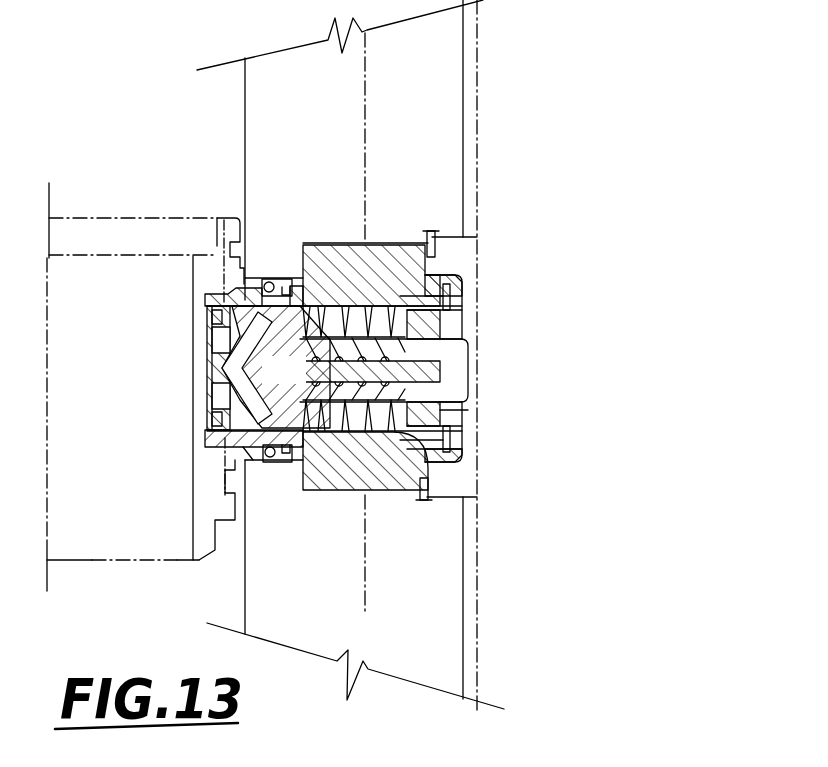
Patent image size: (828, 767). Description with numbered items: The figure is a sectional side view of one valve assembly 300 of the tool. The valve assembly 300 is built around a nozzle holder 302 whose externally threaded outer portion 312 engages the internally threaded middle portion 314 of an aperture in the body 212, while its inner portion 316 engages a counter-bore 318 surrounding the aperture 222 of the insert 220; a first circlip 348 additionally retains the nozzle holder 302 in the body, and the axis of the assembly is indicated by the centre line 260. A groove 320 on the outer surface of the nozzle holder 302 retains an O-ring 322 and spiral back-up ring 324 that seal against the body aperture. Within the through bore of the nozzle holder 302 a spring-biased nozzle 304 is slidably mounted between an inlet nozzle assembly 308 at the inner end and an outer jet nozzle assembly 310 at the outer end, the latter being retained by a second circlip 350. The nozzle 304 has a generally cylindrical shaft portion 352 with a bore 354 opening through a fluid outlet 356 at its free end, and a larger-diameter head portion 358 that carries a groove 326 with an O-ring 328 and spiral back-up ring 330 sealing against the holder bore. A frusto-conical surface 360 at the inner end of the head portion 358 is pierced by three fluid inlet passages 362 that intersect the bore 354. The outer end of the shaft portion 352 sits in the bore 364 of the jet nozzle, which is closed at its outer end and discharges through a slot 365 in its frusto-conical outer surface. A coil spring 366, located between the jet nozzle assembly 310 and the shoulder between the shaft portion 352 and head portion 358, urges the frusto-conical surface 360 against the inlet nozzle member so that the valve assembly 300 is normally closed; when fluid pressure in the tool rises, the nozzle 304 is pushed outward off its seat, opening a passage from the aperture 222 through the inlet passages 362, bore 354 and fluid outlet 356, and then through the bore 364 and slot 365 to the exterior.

The body 212 is at (294, 95).
The insert 220 is at (78, 216).
The aperture 222 is at (205, 384).
The axis line 260 is at (480, 151).
The valve assembly 300 is at (592, 293).
The nozzle holder 302 is at (318, 266).
The nozzle 304 is at (342, 478).
The inlet nozzle assembly 308 is at (217, 407).
The outer jet nozzle assembly 310 is at (448, 333).
The externally threaded outer portion 312 is at (378, 243).
The internally threaded middle portion 314 is at (398, 494).
The inner portion 316 is at (216, 296).
The counter-bore 318 is at (221, 466).
The groove 320 is at (277, 458).
The O-ring 322 is at (267, 465).
The spiral back-up ring 324 is at (279, 463).
The groove 326 is at (276, 367).
The O-ring 328 is at (225, 302).
The spiral back-up ring 330 is at (268, 282).
The first circlip 348 is at (445, 232).
The second circlip 350 is at (462, 300).
The shaft portion 352 is at (457, 461).
The bore 354 is at (462, 392).
The fluid outlet 356 is at (462, 370).
The head portion 358 is at (289, 286).
The frusto-conical surface 360 is at (257, 330).
The fluid inlet passages 362 is at (233, 333).
The bore 364 is at (461, 347).
The slot 365 is at (462, 414).
The coil spring 366 is at (341, 300).